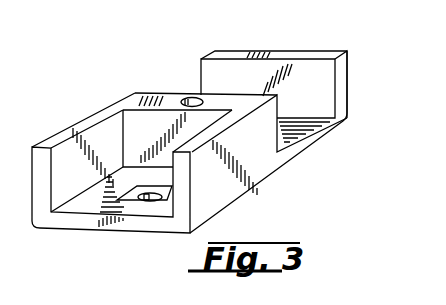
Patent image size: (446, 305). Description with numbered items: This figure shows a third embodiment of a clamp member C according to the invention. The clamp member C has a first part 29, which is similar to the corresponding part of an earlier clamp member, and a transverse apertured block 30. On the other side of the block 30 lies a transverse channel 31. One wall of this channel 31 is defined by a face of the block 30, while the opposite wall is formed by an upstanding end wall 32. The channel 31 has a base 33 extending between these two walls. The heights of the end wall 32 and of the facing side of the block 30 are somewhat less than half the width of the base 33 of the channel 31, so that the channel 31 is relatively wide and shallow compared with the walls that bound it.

The clamp member C is at (320, 179).
The first part 29 is at (88, 118).
The transverse apertured block 30 is at (143, 95).
The transverse channel 31 is at (307, 93).
The upstanding end wall 32 is at (305, 57).
The base 33 is at (316, 124).